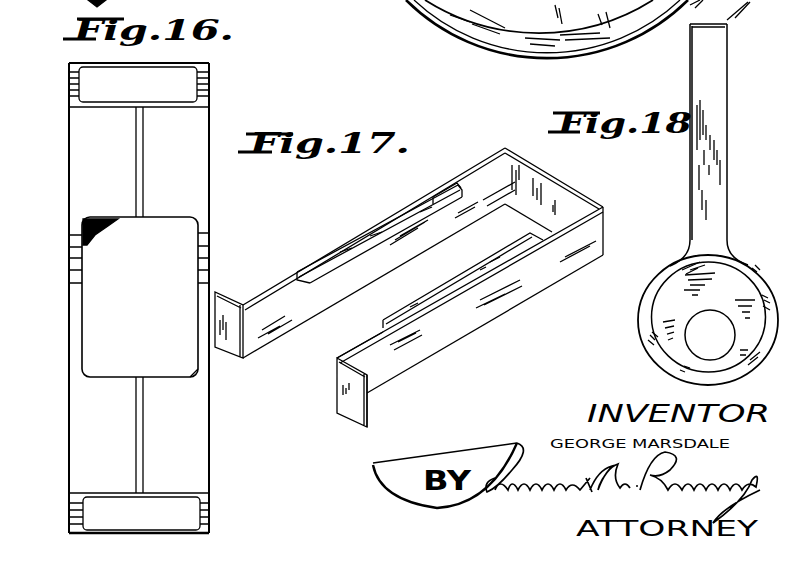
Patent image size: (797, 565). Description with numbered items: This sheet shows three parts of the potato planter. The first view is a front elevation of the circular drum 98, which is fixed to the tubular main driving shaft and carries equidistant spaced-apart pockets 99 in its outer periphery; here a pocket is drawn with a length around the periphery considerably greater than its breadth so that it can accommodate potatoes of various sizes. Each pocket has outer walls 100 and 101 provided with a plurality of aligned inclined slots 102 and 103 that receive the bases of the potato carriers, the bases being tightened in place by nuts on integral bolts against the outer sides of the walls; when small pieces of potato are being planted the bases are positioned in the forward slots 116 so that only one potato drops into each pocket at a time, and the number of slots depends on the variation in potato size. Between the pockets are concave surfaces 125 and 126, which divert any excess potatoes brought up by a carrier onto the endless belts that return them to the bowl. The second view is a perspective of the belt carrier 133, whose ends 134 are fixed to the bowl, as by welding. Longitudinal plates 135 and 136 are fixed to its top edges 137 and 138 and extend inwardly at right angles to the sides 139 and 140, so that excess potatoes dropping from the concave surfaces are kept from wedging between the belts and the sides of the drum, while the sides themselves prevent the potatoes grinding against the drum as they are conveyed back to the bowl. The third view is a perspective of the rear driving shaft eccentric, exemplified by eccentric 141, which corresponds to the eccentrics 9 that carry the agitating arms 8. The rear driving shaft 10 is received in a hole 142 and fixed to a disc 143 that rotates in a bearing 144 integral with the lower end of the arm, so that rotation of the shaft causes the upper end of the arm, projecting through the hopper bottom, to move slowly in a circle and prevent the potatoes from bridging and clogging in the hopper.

In FIG. 16, the circular drum 98 is at (217, 217).
In FIG. 16, the pockets 99 is at (139, 298).
In FIG. 16, the outer wall of pocket 100 is at (82, 340).
In FIG. 16, the outer wall of pocket 101 is at (203, 369).
In FIG. 16, the inclined slots 102 is at (70, 264).
In FIG. 16, the inclined slots 103 is at (205, 262).
In FIG. 16, the forward slots 116 is at (72, 284).
In FIG. 16, the concave surface 125 is at (102, 298).
In FIG. 16, the concave surface 126 is at (176, 298).
In FIG. 17, the belt carrier 133 is at (535, 292).
In FIG. 17, the ends of belt carrier 134 is at (338, 388).
In FIG. 17, the longitudinal plate 135 is at (408, 306).
In FIG. 17, the longitudinal plate 136 is at (437, 195).
In FIG. 17, the top edge of belt carrier 137 is at (363, 348).
In FIG. 17, the top edge of belt carrier 138 is at (348, 240).
In FIG. 17, the side of belt carrier 139 is at (447, 337).
In FIG. 17, the side of belt carrier 140 is at (576, 194).
In FIG. 18, the agitating arm 8 is at (727, 113).
In FIG. 18, the eccentric 9 is at (727, 152).
In FIG. 18, the rear driving shaft 10 is at (709, 314).
In FIG. 18, the eccentric 141 is at (727, 72).
In FIG. 18, the hole 142 is at (700, 343).
In FIG. 18, the disc 143 is at (731, 265).
In FIG. 18, the bearing 144 is at (665, 283).